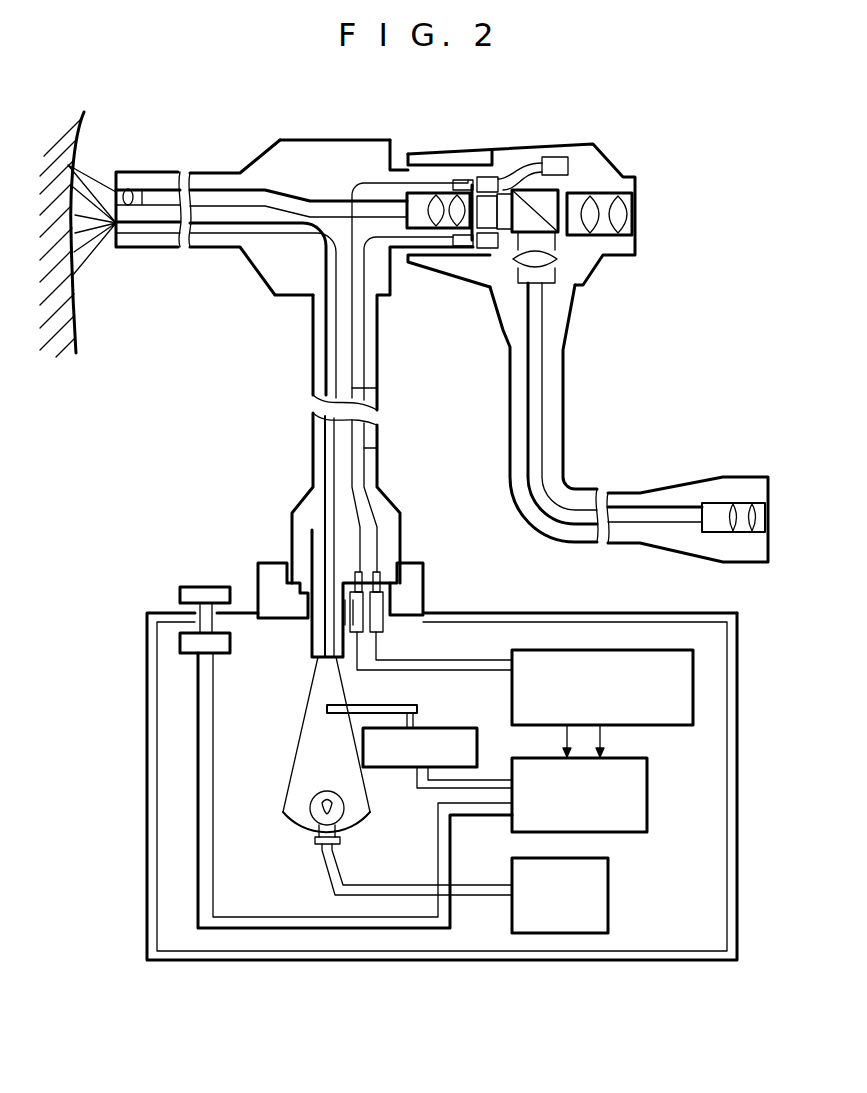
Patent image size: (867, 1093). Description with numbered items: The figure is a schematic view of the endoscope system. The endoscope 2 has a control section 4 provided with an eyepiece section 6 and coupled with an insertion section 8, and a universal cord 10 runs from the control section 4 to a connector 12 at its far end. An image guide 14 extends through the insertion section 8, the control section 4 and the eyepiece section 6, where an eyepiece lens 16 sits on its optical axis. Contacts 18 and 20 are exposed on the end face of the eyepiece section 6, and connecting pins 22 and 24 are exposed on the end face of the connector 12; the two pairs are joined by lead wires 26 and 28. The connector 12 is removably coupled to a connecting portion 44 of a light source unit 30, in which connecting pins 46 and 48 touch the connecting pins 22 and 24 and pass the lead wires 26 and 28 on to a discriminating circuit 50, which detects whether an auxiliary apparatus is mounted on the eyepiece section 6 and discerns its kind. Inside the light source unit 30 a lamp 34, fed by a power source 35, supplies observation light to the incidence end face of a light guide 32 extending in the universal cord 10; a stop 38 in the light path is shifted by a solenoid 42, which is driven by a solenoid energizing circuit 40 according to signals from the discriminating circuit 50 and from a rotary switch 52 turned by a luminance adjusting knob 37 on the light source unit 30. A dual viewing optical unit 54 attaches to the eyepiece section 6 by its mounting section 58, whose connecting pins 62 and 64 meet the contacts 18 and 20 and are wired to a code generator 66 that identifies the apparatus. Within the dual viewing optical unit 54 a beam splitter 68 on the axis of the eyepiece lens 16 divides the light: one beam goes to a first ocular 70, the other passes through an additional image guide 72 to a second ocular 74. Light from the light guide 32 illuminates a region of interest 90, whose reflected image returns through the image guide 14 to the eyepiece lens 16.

The endoscope 2 is at (260, 284).
The control section 4 is at (312, 140).
The eyepiece section 6 is at (396, 160).
The insertion section 8 is at (216, 176).
The universal cord 10 is at (379, 343).
The connector 12 is at (398, 528).
The image guide 14 is at (155, 190).
The eyepiece lens 16 is at (436, 200).
The contact 18 is at (465, 180).
The contact 20 is at (456, 246).
The connecting pin 22 is at (356, 574).
The connecting pin 24 is at (380, 574).
The lead wire 26 is at (357, 388).
The lead wire 28 is at (370, 448).
The light source unit 30 is at (246, 961).
The light guide 32 is at (325, 442).
The lamp 34 is at (358, 828).
The power source 35 is at (609, 892).
The luminance adjusting knob 37 is at (200, 587).
The stop 38 is at (368, 706).
The solenoid energizing circuit 40 is at (648, 808).
The solenoid 42 is at (472, 728).
The connecting portion 44 is at (424, 592).
The connecting pin 46 is at (352, 620).
The connecting pin 48 is at (384, 626).
The discriminating circuit 50 is at (670, 725).
The rotary switch 52 is at (216, 656).
The dual viewing optical unit 54 is at (565, 382).
The mounting section 58 is at (430, 157).
The connecting pin 62 is at (492, 178).
The connecting pin 64 is at (480, 248).
The code generator 66 is at (553, 157).
The beam splitter 68 is at (552, 220).
The first ocular 70 is at (617, 202).
The additional image guide 72 is at (542, 438).
The second ocular 74 is at (736, 504).
The region of interest 90 is at (78, 300).